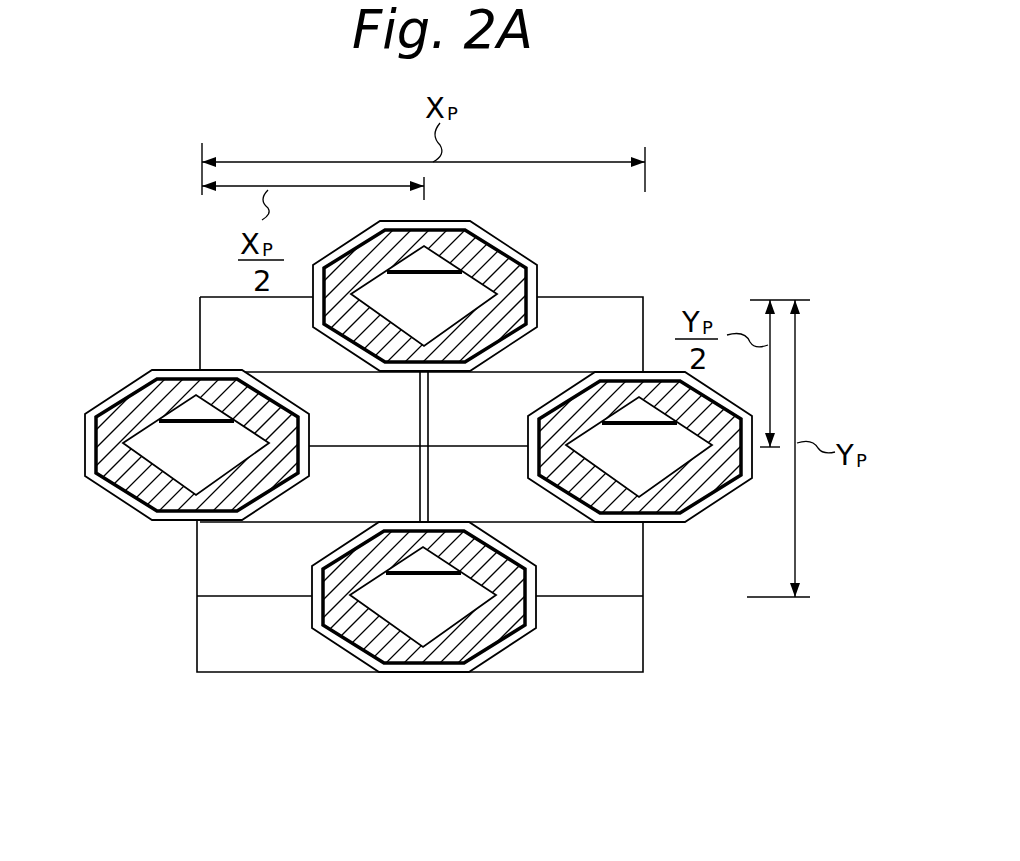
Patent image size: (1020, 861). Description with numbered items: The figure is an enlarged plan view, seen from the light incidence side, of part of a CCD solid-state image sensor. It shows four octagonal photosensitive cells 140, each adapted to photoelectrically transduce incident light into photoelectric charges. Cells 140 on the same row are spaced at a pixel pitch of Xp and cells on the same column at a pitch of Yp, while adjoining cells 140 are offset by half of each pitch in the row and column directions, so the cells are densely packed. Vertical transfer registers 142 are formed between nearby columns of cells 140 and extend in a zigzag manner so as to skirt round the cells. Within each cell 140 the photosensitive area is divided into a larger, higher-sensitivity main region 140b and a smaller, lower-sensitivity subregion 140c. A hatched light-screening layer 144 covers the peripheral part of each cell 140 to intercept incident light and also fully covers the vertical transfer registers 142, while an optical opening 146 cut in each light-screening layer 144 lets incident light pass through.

The photosensitive cell 140 is at (522, 250).
The main region 140b is at (373, 592).
The subregion 140c is at (640, 410).
The vertical transfer register 142 is at (607, 308).
The light-screening layer 144 is at (485, 232).
The optical opening 146 is at (208, 404).